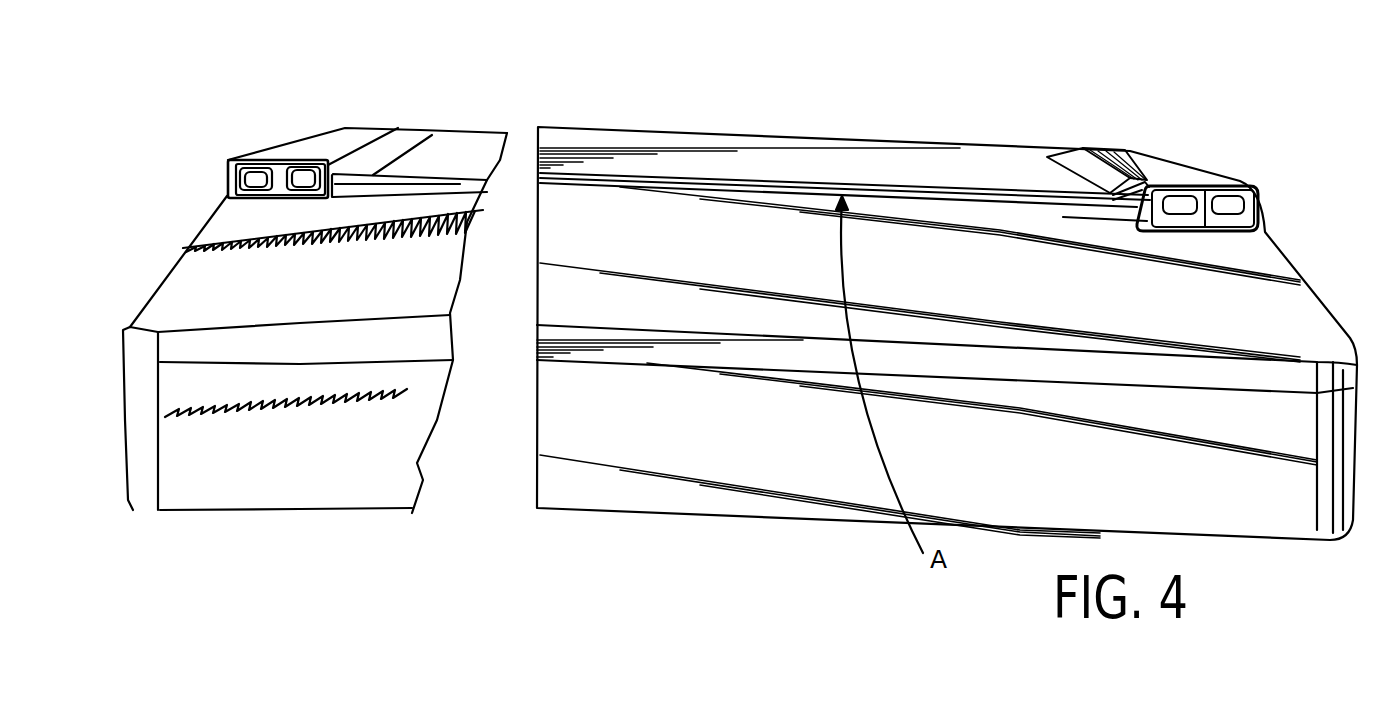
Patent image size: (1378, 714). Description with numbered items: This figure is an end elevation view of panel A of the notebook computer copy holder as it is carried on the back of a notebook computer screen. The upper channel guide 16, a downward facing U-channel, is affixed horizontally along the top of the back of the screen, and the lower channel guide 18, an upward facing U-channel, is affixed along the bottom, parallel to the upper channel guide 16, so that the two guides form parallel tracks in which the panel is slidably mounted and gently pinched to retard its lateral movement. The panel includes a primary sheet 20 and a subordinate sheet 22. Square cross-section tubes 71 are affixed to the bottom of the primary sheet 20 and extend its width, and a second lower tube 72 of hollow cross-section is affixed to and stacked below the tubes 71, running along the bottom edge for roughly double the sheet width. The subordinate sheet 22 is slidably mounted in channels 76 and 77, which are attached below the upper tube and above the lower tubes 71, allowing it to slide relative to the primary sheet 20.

The upper channel guide 16 is at (1262, 207).
The lower channel guide 18 is at (201, 122).
The primary sheet 20 is at (869, 189).
The subordinate sheet 22 is at (983, 210).
The square cross-section tubes 71 is at (308, 118).
The second lower tube 72 is at (255, 172).
The channel 76 is at (1097, 177).
The channel 77 is at (393, 143).